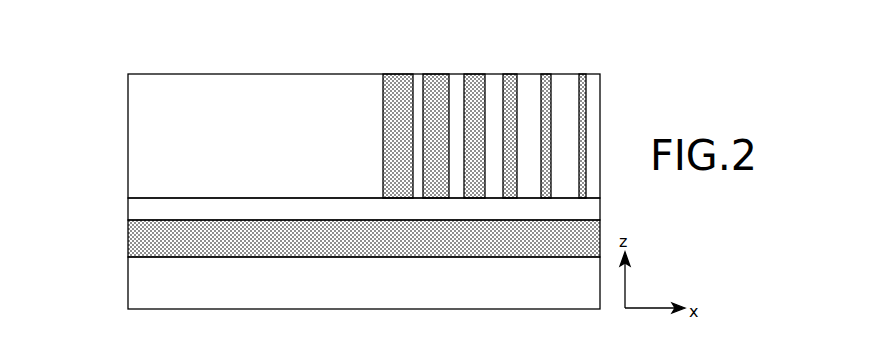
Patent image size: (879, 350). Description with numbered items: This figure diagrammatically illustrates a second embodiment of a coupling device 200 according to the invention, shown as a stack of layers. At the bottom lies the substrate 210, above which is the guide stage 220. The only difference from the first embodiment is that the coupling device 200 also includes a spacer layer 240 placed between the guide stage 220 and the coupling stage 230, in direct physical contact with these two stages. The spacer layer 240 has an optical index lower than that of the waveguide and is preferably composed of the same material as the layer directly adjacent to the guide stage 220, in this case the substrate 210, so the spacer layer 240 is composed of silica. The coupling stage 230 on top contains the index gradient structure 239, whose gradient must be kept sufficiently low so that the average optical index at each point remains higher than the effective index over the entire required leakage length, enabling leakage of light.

The coupling device 200 is at (657, 61).
The substrate 210 is at (138, 283).
The guide stage 220 is at (126, 220).
The coupling stage 230 is at (126, 74).
The index gradient structure 239 is at (600, 64).
The spacer layer 240 is at (138, 210).